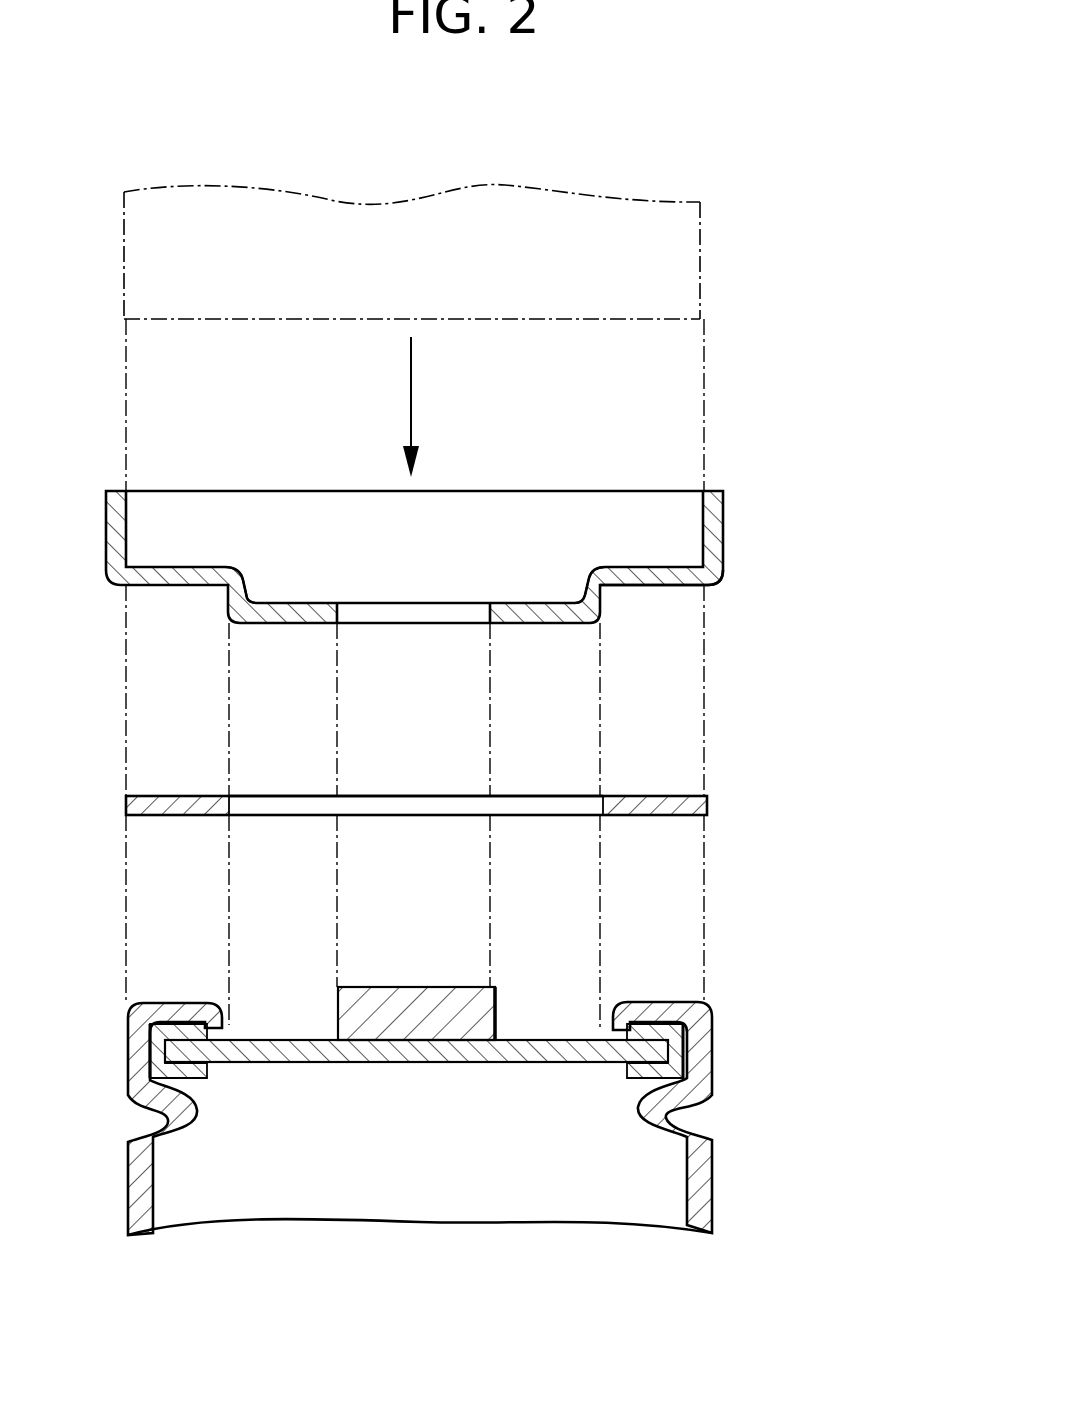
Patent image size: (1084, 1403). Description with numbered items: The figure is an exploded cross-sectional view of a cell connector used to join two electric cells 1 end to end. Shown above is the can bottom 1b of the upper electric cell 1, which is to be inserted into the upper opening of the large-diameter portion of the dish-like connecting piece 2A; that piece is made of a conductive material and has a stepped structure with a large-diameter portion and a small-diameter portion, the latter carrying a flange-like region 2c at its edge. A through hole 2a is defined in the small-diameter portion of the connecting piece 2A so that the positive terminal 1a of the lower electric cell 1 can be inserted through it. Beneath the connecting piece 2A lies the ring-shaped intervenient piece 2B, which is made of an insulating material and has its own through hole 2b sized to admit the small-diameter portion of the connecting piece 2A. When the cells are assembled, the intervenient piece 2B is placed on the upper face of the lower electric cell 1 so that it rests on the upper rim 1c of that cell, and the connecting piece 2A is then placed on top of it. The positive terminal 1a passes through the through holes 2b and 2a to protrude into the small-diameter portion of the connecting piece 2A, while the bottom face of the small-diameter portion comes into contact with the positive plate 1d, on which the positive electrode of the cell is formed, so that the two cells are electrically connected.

The electric cell 1 is at (511, 663).
The positive terminal 1a is at (373, 992).
The can bottom 1b is at (240, 205).
The upper rim 1c is at (667, 1002).
The positive plate 1d is at (582, 1040).
The connecting piece 2A is at (742, 512).
The through hole 2a is at (418, 612).
The intervenient piece 2B is at (722, 800).
The through hole 2b is at (525, 803).
The flange 2c is at (647, 562).